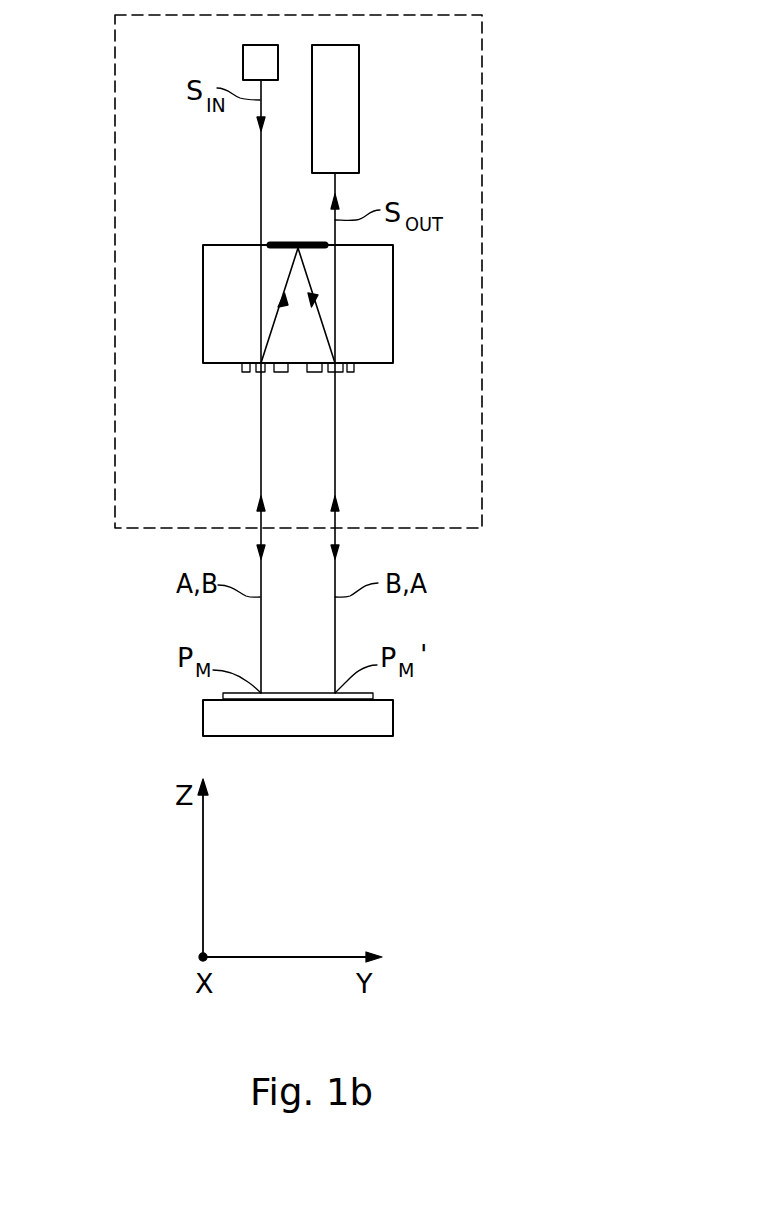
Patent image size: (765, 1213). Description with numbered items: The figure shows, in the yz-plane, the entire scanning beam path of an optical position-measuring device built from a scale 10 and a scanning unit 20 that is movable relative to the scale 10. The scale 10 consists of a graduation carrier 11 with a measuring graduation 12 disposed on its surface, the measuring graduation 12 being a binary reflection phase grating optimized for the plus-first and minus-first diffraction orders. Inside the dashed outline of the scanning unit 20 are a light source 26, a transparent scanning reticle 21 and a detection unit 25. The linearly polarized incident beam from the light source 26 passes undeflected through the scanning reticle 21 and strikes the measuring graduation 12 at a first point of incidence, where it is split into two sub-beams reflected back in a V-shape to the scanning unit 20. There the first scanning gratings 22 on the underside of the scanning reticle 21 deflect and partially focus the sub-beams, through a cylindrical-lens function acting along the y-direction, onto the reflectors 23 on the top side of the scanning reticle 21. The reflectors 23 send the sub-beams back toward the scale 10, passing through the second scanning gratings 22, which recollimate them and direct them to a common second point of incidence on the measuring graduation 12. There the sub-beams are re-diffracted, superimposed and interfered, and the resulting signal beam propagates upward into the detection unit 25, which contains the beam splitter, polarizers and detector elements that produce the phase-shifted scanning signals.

The scale 10 is at (281, 727).
The graduation carrier 11 is at (383, 720).
The measuring graduation 12 is at (373, 696).
The scanning unit 20 is at (482, 107).
The scanning reticle 21 is at (393, 278).
The scanning gratings 22 is at (415, 432).
The reflectors 23 is at (303, 242).
The detection unit 25 is at (355, 72).
The light source 26 is at (243, 58).